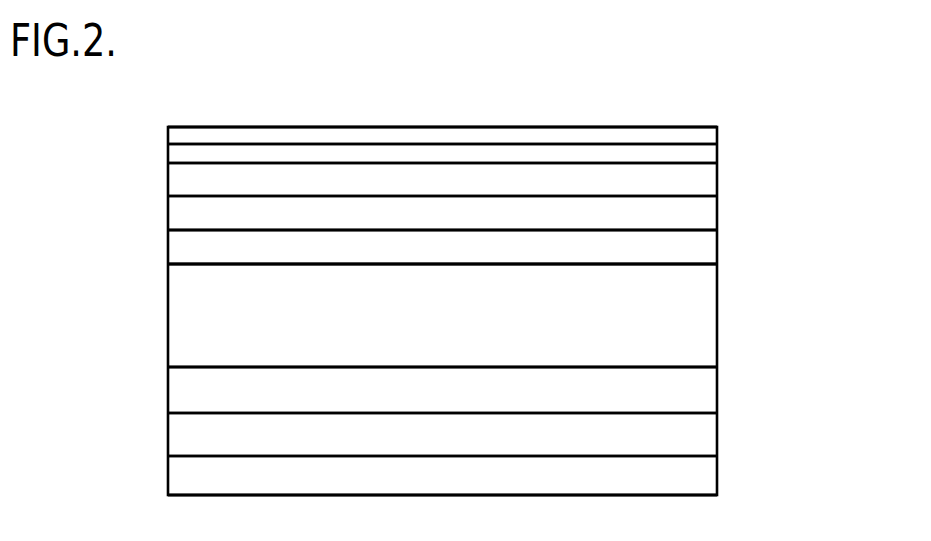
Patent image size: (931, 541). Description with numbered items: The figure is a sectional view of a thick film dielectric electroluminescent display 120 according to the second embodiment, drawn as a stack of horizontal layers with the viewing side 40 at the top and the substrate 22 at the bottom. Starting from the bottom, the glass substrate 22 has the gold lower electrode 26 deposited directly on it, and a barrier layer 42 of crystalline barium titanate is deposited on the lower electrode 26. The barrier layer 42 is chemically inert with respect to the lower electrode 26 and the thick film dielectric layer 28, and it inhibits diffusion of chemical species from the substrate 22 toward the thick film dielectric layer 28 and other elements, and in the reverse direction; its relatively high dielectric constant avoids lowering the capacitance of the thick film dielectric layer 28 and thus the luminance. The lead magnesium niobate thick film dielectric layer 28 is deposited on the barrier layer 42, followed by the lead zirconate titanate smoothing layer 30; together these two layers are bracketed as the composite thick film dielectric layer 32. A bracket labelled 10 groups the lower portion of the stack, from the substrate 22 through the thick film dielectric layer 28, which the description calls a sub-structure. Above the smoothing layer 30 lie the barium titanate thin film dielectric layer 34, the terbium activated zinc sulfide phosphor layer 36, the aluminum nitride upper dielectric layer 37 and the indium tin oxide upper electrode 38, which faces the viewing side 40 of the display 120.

The thick film dielectric electroluminescent display 120 is at (814, 116).
The viewing side 40 is at (438, 118).
The upper electrode 38 is at (708, 129).
The upper dielectric layer 37 is at (708, 147).
The phosphor layer 36 is at (708, 177).
The thin film dielectric layer 34 is at (708, 209).
The smoothing layer 30 is at (708, 242).
The thick film dielectric layer 28 is at (708, 325).
The barrier layer 42 is at (708, 385).
The lower electrode 26 is at (708, 429).
The substrate 22 is at (708, 475).
The lower structure 10 is at (67, 262).
The composite thick film dielectric layer 32 is at (137, 229).